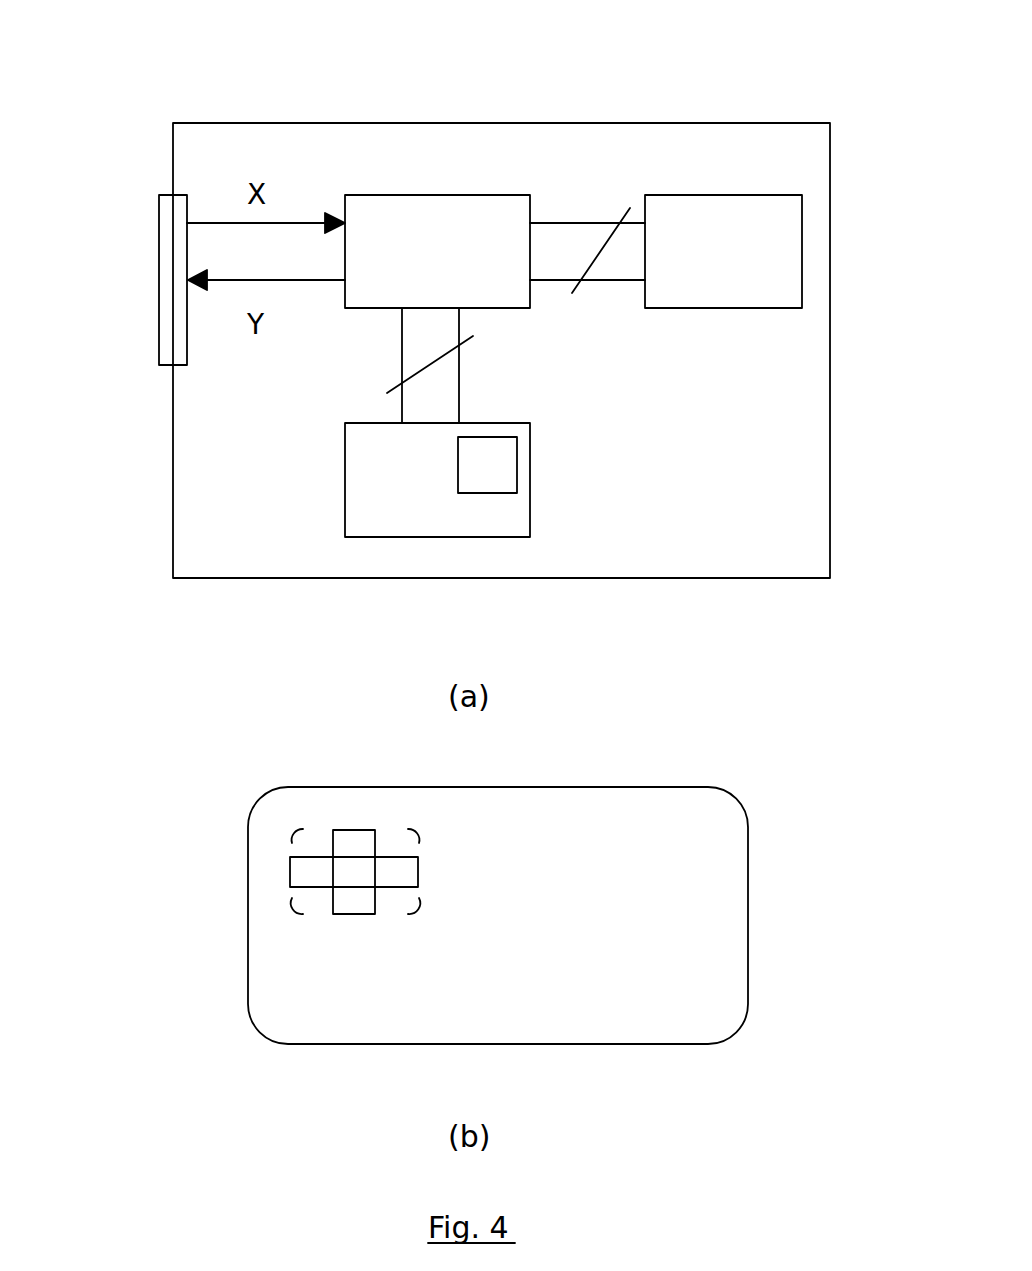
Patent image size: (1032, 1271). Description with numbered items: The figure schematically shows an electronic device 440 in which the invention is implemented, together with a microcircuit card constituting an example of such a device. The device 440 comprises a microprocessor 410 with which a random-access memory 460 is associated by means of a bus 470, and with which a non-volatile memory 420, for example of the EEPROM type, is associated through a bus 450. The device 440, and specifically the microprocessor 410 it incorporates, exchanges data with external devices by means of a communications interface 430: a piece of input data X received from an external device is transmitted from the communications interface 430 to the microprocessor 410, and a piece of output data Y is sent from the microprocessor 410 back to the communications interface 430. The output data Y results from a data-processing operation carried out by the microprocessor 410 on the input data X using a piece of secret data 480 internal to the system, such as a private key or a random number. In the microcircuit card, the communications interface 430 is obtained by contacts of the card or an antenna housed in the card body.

The microprocessor 410 is at (443, 223).
The non-volatile memory 420 is at (400, 507).
The communications interface 430 is at (172, 322).
The electronic device 440 is at (200, 532).
The bus 450 is at (410, 352).
The random-access memory 460 is at (775, 283).
The bus 470 is at (558, 237).
The secret data 480 is at (487, 465).